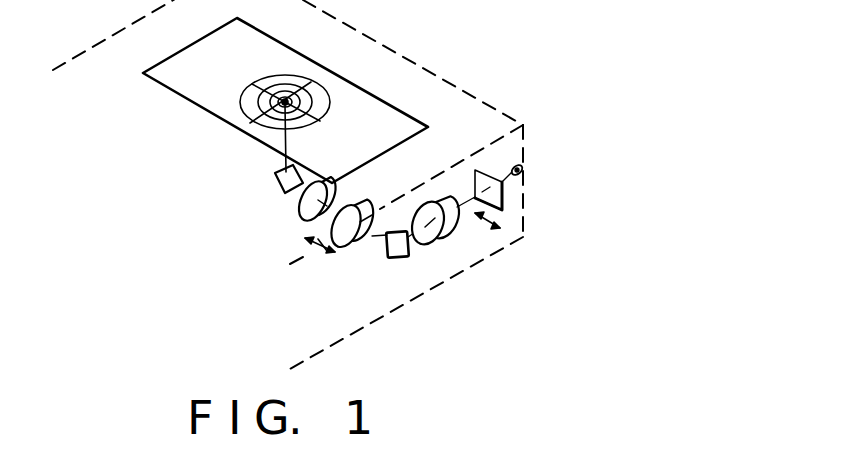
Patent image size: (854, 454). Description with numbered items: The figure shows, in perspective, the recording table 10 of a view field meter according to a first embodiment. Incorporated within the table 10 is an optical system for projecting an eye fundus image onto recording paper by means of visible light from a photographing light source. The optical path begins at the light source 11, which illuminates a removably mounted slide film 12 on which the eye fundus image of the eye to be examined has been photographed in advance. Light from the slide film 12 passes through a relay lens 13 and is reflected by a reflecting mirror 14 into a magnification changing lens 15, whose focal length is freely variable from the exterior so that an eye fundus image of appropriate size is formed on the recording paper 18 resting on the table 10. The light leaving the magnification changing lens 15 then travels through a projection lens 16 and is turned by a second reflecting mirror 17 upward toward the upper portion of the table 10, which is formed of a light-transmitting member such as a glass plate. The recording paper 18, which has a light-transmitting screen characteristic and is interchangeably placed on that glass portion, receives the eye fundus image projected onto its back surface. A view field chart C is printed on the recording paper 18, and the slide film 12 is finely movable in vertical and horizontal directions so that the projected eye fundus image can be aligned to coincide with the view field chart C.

The recording table 10 is at (458, 265).
The light source 11 is at (522, 165).
The slide film 12 is at (503, 200).
The relay lens 13 is at (458, 234).
The reflecting mirror 14 is at (402, 259).
The magnification changing lens 15 is at (347, 240).
The projection lens 16 is at (302, 215).
The reflecting mirror 17 is at (277, 180).
The recording paper 18 is at (398, 120).
The view field chart C is at (241, 104).